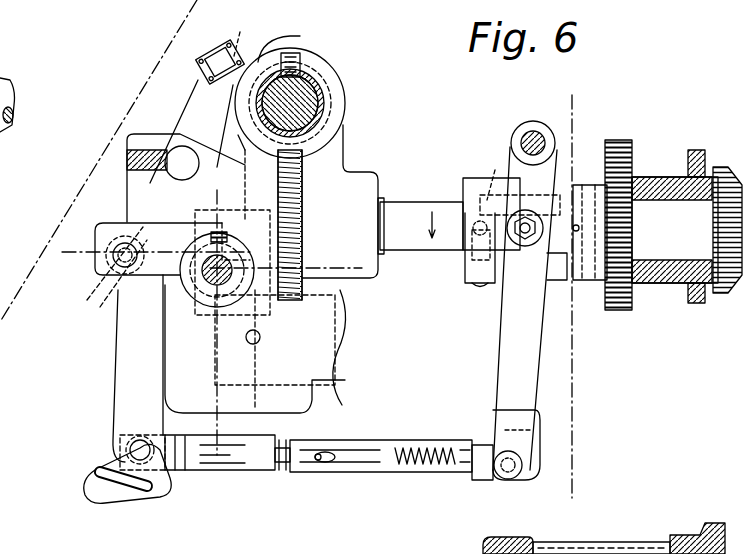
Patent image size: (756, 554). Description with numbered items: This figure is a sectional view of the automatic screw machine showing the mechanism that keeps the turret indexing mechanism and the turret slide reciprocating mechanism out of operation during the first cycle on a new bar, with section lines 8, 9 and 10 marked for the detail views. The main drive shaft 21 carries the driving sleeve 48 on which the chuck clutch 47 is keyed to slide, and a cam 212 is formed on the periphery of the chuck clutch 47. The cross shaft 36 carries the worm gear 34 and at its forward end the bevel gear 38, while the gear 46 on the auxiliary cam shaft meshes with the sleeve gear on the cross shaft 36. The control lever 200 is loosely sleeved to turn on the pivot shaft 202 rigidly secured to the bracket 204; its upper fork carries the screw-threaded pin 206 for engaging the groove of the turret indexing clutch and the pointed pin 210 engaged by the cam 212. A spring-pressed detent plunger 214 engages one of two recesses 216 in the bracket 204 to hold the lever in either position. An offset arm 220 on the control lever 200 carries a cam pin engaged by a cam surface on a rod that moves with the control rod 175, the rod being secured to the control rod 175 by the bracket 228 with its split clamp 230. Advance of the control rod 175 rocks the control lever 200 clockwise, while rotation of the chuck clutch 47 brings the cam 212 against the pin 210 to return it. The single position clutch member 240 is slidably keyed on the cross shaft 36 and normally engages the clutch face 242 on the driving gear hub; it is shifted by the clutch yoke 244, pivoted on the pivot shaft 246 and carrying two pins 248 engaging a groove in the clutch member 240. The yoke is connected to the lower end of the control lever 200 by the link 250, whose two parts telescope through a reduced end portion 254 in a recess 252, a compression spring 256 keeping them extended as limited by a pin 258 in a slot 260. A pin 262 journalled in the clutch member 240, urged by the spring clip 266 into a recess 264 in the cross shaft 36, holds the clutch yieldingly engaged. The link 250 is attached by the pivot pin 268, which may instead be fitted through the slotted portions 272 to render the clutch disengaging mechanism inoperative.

The section line 8- 8 is at (212, 206).
The section line 9- 9 is at (75, 259).
The section line 10- 10 is at (580, 111).
The main drive shaft 21 is at (12, 115).
The worm gear 34 is at (304, 222).
The cross shaft 36 is at (548, 226).
The bevel gear 38 is at (732, 175).
The gear 46 is at (627, 297).
The chuck clutch 47 is at (342, 84).
The driving sleeve 48 is at (2, 84).
The control rod 175 is at (200, 283).
The control lever 200 is at (192, 116).
The pivot shaft 202 is at (185, 165).
The bracket 204 is at (138, 190).
The pin 206 is at (245, 33).
The pointed pin 210 is at (206, 78).
The cam 212 is at (290, 42).
The spring-pressed detent plunger 214 is at (112, 247).
The recesses 216 is at (102, 273).
The offset arm 220 is at (180, 232).
The bracket 228 is at (203, 315).
The split clamp 230 is at (226, 241).
The single position clutch member 240 is at (478, 185).
The clutch face 242 is at (593, 278).
The clutch yoke 244 is at (503, 361).
The pivot shaft 246 is at (533, 130).
The pins 248 is at (522, 242).
The link 250 is at (186, 474).
The recess 252 is at (398, 472).
The reduced end portion 254 is at (283, 472).
The compression spring 256 is at (420, 447).
The pin 258 is at (327, 463).
The slot 260 is at (328, 452).
The pin 262 is at (465, 205).
The recess 264 is at (489, 168).
The spring clip 266 is at (478, 268).
The pivot pin 268 is at (133, 447).
The slotted portions 272 is at (90, 463).